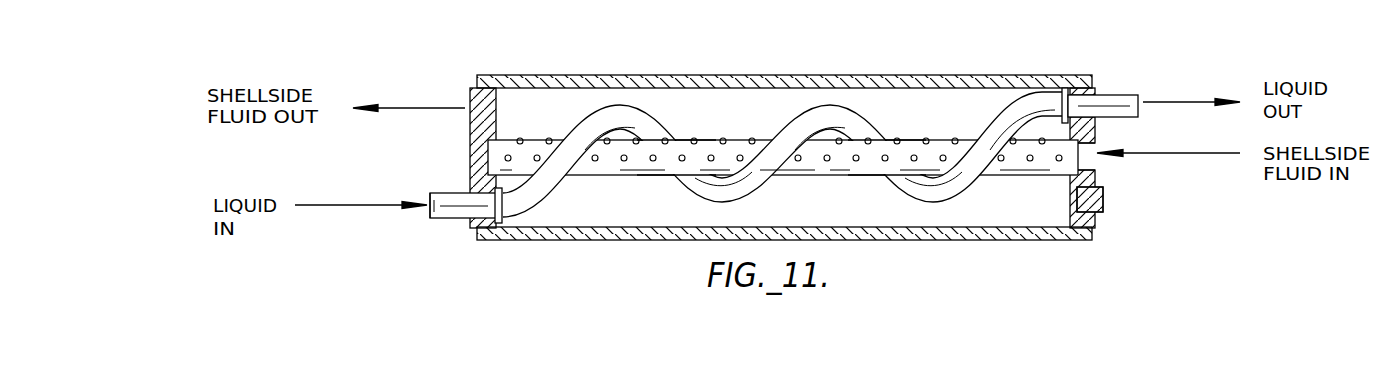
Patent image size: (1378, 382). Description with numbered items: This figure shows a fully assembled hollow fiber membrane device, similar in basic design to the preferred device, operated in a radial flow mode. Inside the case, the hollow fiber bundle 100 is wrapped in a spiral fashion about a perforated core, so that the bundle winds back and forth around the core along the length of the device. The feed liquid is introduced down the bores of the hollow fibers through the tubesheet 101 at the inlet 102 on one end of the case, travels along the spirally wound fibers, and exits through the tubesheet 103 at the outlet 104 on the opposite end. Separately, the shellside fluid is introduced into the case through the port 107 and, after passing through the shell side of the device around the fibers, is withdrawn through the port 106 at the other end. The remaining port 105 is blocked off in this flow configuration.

The hollow fiber bundle 100 is at (630, 113).
The tubesheet 101 is at (448, 195).
The inlet 102 is at (422, 210).
The tubesheet 103 is at (1103, 86).
The outlet 104 is at (1146, 92).
The port 105 is at (1102, 204).
The port 106 is at (466, 100).
The port 107 is at (1102, 162).